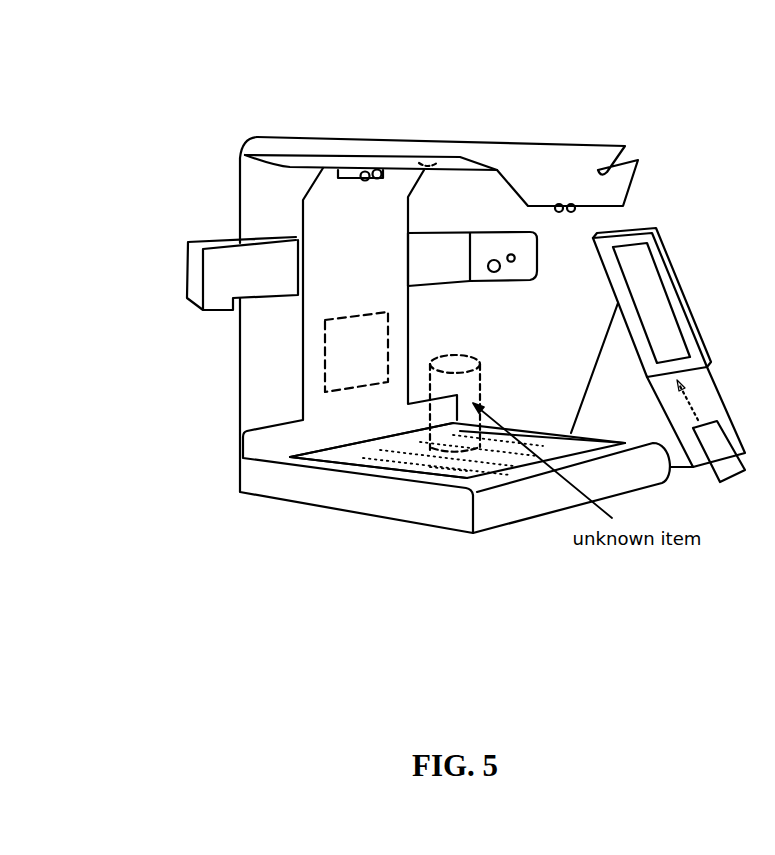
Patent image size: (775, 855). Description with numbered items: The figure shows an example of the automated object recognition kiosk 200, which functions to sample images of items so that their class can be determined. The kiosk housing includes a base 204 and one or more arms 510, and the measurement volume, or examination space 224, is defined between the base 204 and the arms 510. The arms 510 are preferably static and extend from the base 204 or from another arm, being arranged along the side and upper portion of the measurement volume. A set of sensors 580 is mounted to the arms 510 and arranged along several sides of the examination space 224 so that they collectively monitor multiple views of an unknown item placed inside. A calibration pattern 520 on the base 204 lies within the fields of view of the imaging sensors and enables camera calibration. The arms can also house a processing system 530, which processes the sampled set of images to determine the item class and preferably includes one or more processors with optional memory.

The automated object recognition kiosk 200 is at (601, 96).
The base 204 is at (400, 481).
The examination space 224 is at (331, 443).
The arms 510 is at (231, 234).
The calibration pattern 520 is at (469, 474).
The processing system 530 is at (308, 358).
The sensors 580 is at (385, 160).